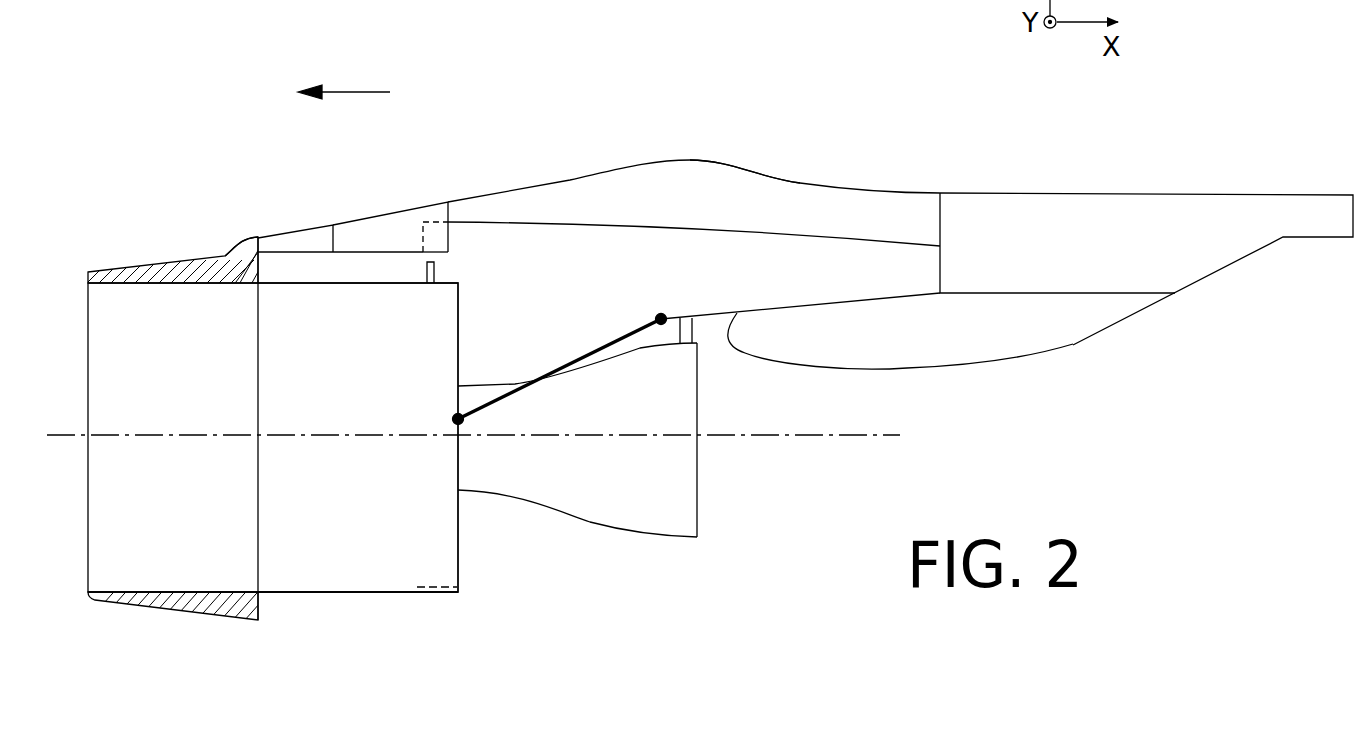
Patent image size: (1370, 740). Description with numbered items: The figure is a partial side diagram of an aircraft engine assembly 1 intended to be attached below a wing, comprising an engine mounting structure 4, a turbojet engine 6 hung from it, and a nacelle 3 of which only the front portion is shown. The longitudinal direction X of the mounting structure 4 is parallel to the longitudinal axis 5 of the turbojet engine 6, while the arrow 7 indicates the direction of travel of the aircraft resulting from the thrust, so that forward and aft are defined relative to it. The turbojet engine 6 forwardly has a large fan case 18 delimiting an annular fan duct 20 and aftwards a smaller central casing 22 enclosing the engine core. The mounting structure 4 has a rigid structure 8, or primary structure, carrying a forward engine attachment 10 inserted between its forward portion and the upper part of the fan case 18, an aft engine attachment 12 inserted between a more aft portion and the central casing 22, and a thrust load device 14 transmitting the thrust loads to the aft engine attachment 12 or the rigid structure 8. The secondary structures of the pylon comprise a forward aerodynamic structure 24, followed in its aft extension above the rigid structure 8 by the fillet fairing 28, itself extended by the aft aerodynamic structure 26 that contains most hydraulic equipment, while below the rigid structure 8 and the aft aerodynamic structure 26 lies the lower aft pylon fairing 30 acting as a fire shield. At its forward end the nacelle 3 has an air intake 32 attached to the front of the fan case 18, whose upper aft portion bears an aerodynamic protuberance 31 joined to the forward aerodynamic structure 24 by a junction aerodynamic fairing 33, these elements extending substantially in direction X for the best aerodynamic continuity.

The aircraft engine assembly 1 is at (185, 347).
The nacelle 3 is at (184, 387).
The engine mounting structure 4 is at (708, 140).
The longitudinal axis 5 is at (63, 435).
The turbojet engine 6 is at (341, 595).
The arrow 7 is at (350, 92).
The rigid structure 8 is at (843, 248).
The forward engine attachment 10 is at (423, 275).
The aft engine attachment 12 is at (688, 330).
The thrust load device 14 is at (526, 390).
The fan case 18 is at (273, 327).
The annular fan duct 20 is at (460, 588).
The central casing 22 is at (503, 497).
The forward aerodynamic structure 24 is at (390, 216).
The aft aerodynamic structure 26 is at (1044, 209).
The fillet fairing 28 is at (755, 185).
The lower aft pylon fairing 30 is at (1030, 349).
The aerodynamic protuberance 31 is at (247, 237).
The air intake 32 is at (128, 273).
The junction aerodynamic fairing 33 is at (295, 235).